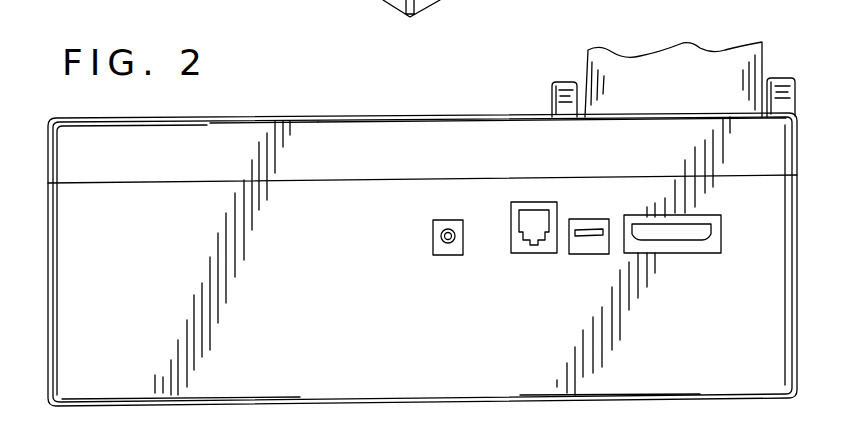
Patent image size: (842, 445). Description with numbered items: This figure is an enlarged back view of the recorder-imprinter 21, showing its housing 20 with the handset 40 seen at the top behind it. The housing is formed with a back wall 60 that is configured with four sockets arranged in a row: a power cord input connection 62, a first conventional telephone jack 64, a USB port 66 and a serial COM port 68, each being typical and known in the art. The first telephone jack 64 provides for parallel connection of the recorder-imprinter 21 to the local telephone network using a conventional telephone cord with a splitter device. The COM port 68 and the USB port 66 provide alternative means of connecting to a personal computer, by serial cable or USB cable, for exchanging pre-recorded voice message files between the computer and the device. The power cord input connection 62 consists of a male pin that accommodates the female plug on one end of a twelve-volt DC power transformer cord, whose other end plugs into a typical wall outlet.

The housing 20 is at (456, 117).
The recorder-imprinter 21 is at (378, 102).
The handset 40 is at (690, 57).
The back wall 60 is at (181, 233).
The power cord input connection 62 is at (437, 256).
The first conventional telephone jack 64 is at (520, 249).
The USB port 66 is at (583, 244).
The serial COM port 68 is at (690, 248).